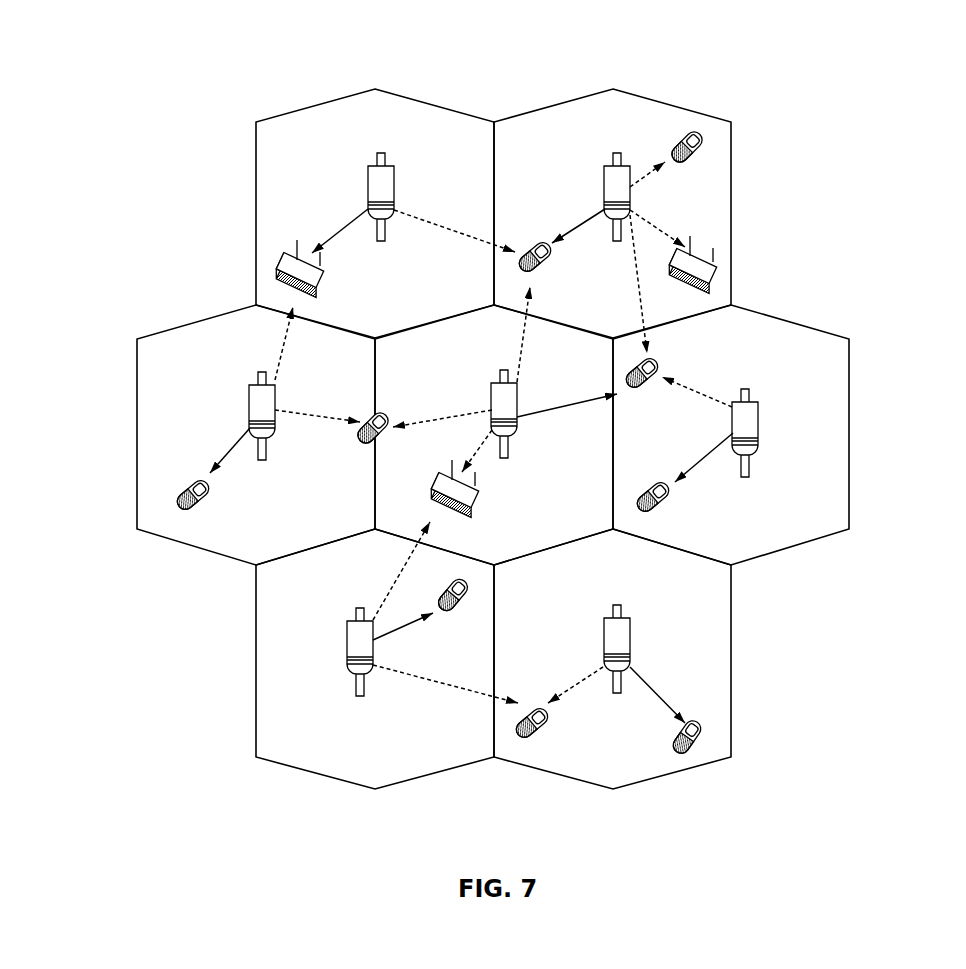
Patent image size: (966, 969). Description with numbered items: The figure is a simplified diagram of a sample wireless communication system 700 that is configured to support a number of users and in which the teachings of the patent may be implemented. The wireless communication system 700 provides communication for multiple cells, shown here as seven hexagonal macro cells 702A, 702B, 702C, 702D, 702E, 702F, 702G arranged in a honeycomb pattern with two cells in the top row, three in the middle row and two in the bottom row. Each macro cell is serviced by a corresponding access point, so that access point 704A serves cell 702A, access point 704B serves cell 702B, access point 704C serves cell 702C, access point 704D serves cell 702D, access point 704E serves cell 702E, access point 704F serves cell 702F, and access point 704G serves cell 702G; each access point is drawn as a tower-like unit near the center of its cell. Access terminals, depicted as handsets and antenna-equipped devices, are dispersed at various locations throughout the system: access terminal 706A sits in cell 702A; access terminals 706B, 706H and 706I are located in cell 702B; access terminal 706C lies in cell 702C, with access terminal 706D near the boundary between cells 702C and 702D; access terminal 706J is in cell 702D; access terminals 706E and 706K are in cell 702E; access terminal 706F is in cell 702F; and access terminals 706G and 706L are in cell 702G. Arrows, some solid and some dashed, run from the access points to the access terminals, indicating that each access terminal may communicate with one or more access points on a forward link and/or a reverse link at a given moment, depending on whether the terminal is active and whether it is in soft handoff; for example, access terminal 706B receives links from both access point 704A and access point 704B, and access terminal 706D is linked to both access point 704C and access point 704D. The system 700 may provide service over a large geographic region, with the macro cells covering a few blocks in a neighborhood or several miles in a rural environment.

The wireless communication system 700 is at (512, 64).
The macro cell 702A is at (330, 103).
The macro cell 702B is at (613, 90).
The macro cell 702C is at (137, 433).
The macro cell 702D is at (494, 435).
The macro cell 702E is at (849, 432).
The macro cell 702F is at (257, 662).
The macro cell 702G is at (731, 660).
The access point 704A is at (378, 155).
The access point 704B is at (612, 153).
The access point 704C is at (256, 373).
The access point 704D is at (500, 371).
The access point 704E is at (744, 389).
The access point 704F is at (361, 606).
The access point 704G is at (615, 605).
The access terminal 706A is at (319, 287).
The access terminal 706B is at (548, 270).
The access terminal 706C is at (207, 488).
The access terminal 706D is at (378, 414).
The access terminal 706E is at (651, 364).
The access terminal 706F is at (468, 596).
The access terminal 706G is at (540, 733).
The access terminal 706H is at (697, 267).
The access terminal 706I is at (680, 135).
The access terminal 706J is at (476, 502).
The access terminal 706K is at (669, 486).
The access terminal 706L is at (690, 757).